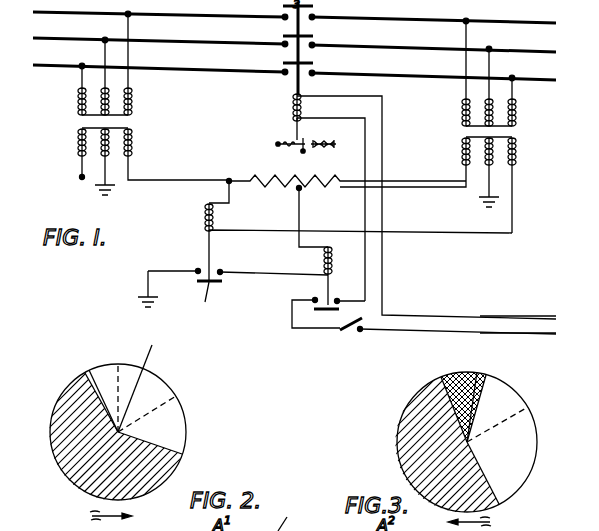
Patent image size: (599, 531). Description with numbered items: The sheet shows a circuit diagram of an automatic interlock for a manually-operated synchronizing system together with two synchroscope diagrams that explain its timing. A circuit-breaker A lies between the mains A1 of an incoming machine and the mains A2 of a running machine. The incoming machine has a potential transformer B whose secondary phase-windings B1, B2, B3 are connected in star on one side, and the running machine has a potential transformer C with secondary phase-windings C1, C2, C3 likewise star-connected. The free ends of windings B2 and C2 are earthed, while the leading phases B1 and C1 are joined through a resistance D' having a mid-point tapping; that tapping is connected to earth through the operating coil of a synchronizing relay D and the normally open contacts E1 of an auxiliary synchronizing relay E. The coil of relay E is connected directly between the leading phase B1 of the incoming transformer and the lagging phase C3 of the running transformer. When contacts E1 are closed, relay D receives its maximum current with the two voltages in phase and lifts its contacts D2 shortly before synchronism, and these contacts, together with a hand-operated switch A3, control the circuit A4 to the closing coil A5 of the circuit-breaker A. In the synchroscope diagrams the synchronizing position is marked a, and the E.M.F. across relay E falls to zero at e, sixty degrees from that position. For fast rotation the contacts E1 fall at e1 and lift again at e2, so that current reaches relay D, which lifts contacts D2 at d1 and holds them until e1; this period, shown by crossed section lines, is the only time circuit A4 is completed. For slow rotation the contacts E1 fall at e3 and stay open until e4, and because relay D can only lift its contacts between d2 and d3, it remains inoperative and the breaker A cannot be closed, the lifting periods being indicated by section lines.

In FIG. 1, the circuit-breaker A is at (283, 15).
In FIG. 1, the mains of incoming machine A1 is at (210, 18).
In FIG. 1, the mains of running machine A2 is at (437, 22).
In FIG. 1, the hand-operated switch A3 is at (343, 336).
In FIG. 1, the closing circuit A4 is at (464, 330).
In FIG. 1, the closing coil A5 is at (293, 102).
In FIG. 1, the potential transformer of incoming machine B is at (80, 127).
In FIG. 1, the leading phase secondary winding B1 is at (131, 136).
In FIG. 1, the secondary phase-winding B2 is at (102, 147).
In FIG. 1, the secondary phase-winding B3 is at (80, 131).
In FIG. 1, the potential transformer of running machine C is at (512, 137).
In FIG. 1, the leading phase secondary winding C1 is at (462, 143).
In FIG. 1, the secondary phase-winding C2 is at (494, 150).
In FIG. 1, the lagging phase secondary winding C3 is at (514, 146).
In FIG. 1, the synchronizing relay D is at (354, 246).
In FIG. 1, the resistance D' is at (347, 173).
In FIG. 1, the synchronizing relay contacts D2 is at (322, 310).
In FIG. 1, the auxiliary synchronizing relay E is at (205, 219).
In FIG. 1, the auxiliary synchronizing relay contacts E1 is at (233, 298).
In FIG. 2, the synchronizing position a is at (116, 363).
In FIG. 3, the synchronizing position a is at (477, 372).
In FIG. 3, the synchronizing relay lift position d1 is at (441, 377).
In FIG. 2, the synchronizing relay operating limit d2 is at (142, 378).
In FIG. 2, the synchronizing relay operating limit d3 is at (87, 368).
In FIG. 2, the auxiliary relay zero position e is at (176, 396).
In FIG. 3, the auxiliary relay zero position e is at (528, 407).
In FIG. 3, the fast-rotation contact fall position e1 is at (486, 375).
In FIG. 3, the fast-rotation contact lift position e2 is at (499, 504).
In FIG. 2, the slow-rotation contact fall position e3 is at (182, 454).
In FIG. 2, the slow-rotation contact lift position e4 is at (83, 372).